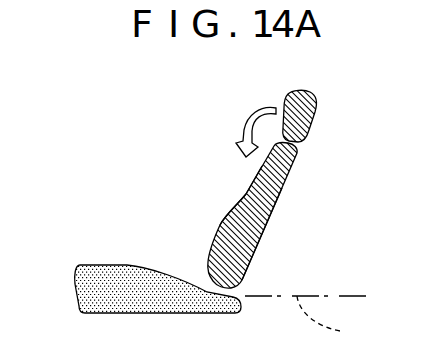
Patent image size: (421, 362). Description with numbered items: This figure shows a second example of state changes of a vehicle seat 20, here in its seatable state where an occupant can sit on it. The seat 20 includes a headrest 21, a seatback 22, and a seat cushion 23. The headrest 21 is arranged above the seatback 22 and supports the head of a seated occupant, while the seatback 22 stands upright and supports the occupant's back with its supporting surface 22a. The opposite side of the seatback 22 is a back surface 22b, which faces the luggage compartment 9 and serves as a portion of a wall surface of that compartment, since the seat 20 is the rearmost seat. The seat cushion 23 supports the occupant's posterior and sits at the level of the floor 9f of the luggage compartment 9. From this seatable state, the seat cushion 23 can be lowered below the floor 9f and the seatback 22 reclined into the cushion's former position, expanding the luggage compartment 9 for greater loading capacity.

The seat 20 is at (188, 158).
The headrest 21 is at (313, 113).
The seatback 22 is at (293, 166).
The supporting surface 22a is at (251, 184).
The back surface 22b is at (275, 207).
The seat cushion 23 is at (95, 264).
The luggage compartment 9 is at (326, 280).
The floor 9f is at (330, 321).